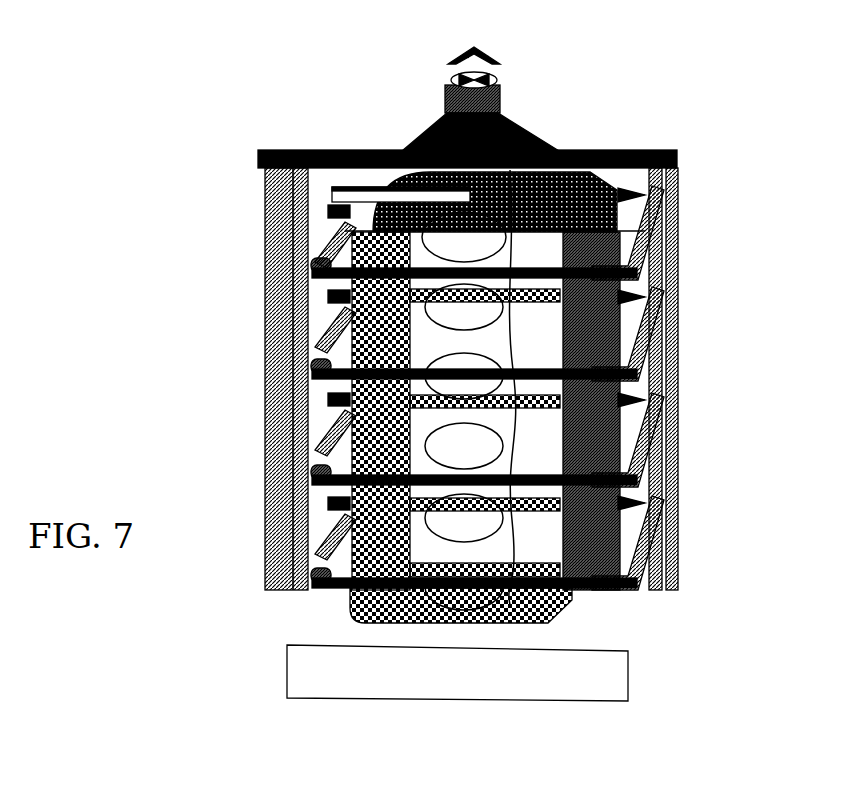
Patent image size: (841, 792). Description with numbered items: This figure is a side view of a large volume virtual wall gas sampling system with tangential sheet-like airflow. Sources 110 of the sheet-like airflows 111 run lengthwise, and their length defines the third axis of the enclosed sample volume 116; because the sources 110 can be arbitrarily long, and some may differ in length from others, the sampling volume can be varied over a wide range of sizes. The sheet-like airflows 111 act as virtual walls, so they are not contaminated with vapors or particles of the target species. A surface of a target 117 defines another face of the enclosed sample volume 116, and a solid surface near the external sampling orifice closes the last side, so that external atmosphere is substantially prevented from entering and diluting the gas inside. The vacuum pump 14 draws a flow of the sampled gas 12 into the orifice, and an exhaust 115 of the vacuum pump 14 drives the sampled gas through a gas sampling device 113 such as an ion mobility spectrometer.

The sources of the sheet-like airflows 110 is at (262, 190).
The gas sampling device 113 is at (498, 92).
The exhaust 115 is at (497, 63).
The vacuum pump 14 is at (453, 82).
The sampled gas 12 is at (645, 231).
The enclosed sample volume 116 is at (598, 323).
The sheet-like airflows 111 is at (637, 360).
The target 117 is at (629, 676).